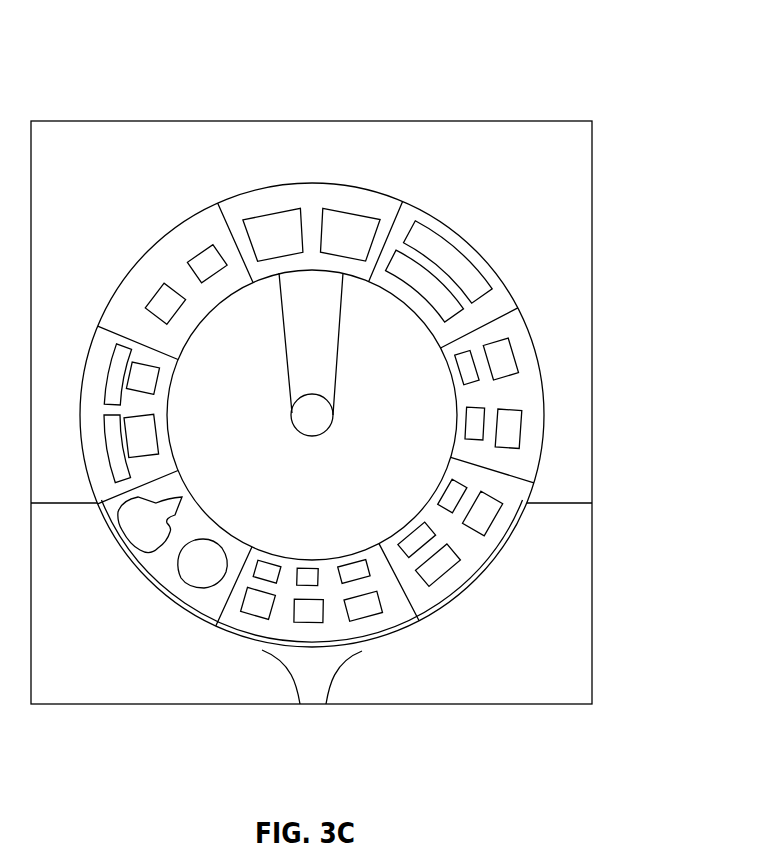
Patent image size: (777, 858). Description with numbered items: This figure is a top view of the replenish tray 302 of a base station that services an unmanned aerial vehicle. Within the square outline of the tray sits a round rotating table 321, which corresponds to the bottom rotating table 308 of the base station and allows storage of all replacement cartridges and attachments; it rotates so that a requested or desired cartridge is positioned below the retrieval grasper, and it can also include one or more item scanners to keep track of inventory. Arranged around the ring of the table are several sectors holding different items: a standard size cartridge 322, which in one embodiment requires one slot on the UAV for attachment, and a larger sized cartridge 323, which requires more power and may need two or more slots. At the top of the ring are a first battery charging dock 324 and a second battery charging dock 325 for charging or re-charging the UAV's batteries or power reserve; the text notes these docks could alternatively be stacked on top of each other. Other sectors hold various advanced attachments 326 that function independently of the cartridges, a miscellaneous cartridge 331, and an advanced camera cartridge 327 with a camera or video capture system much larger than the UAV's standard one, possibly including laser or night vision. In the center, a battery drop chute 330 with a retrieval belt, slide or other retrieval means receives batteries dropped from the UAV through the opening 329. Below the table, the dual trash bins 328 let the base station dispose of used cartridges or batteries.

The replenish tray 302 is at (563, 86).
The bottom rotating table 308 is at (176, 222).
The round rotating table 321 is at (533, 492).
The standard size cartridge 322 is at (513, 357).
The larger sized cartridge 323 is at (455, 250).
The first battery charging dock 324 is at (357, 208).
The second battery charging dock 325 is at (268, 210).
The advanced attachments 326 is at (103, 373).
The advanced camera cartridge 327 is at (128, 538).
The dual trash bins 328 is at (128, 690).
The opening 329 is at (330, 430).
The battery drop chute 330 is at (340, 327).
The cartridge 331 is at (157, 293).